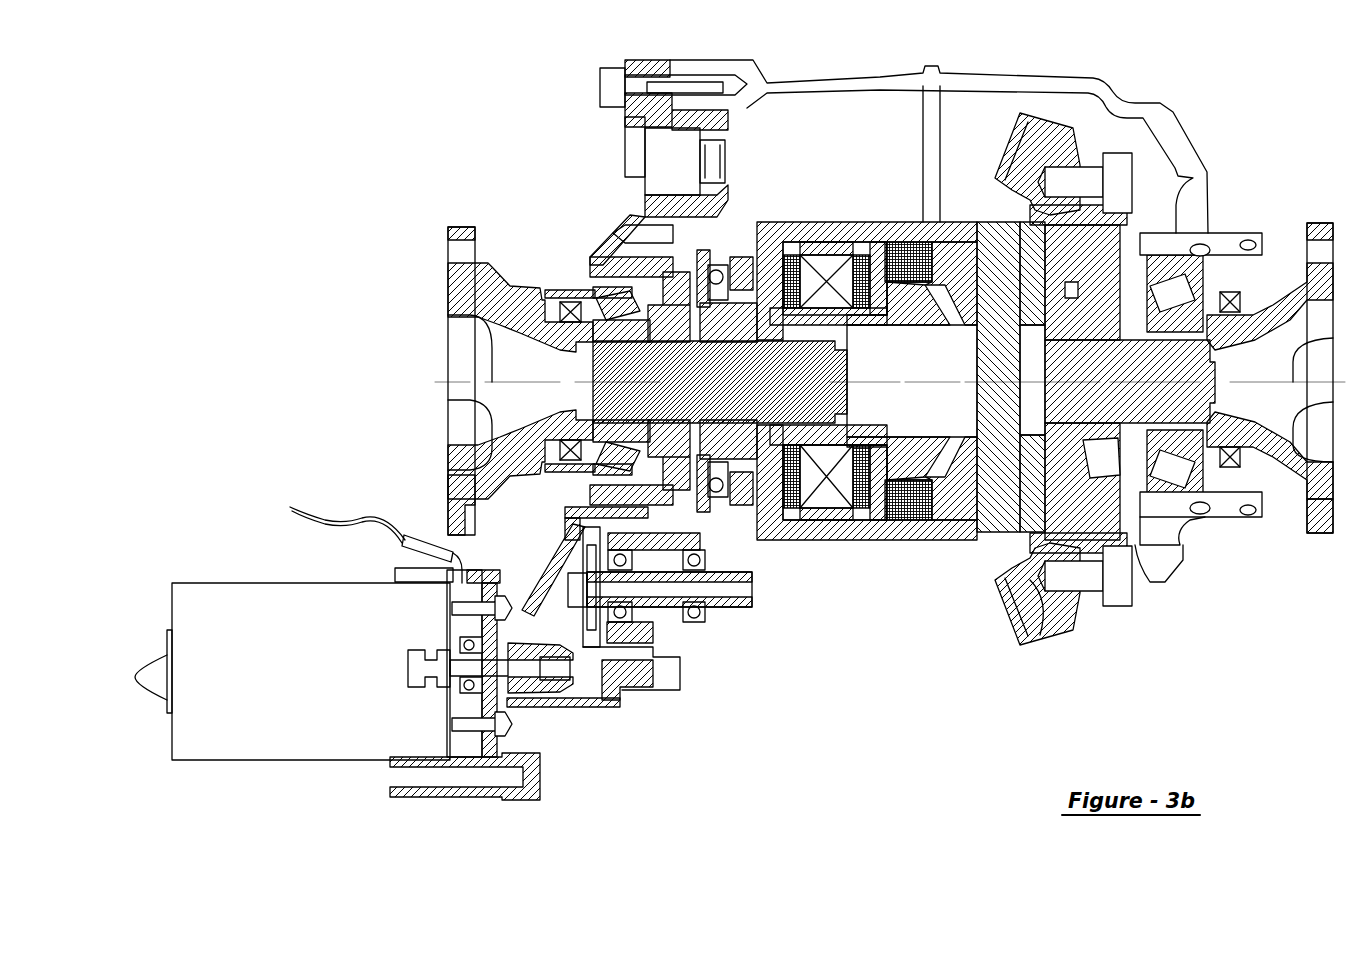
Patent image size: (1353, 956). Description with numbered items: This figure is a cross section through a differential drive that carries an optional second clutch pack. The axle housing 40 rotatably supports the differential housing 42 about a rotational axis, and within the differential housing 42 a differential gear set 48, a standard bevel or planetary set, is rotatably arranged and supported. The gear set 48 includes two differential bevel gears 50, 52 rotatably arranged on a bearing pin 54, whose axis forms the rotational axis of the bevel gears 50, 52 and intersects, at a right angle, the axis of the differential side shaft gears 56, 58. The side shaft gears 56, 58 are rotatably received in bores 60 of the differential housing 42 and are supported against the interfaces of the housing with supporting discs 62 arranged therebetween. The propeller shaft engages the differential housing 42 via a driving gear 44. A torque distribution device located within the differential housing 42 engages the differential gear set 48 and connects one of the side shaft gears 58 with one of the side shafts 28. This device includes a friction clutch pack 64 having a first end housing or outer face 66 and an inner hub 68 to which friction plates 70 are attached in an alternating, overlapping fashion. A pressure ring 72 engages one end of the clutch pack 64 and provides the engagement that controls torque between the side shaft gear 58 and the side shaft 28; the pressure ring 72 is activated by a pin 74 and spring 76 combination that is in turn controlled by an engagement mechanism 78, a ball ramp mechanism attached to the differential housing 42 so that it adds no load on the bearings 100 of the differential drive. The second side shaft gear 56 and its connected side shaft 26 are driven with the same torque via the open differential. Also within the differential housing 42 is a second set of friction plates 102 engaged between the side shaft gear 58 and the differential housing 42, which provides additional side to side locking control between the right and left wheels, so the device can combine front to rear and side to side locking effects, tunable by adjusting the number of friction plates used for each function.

The side shaft 26 is at (1160, 370).
The side shaft 28 is at (625, 360).
The axle housing 40 is at (985, 72).
The differential housing 42 is at (795, 235).
The driving gear 44 is at (1035, 640).
The differential gear set 48 is at (1125, 575).
The differential bevel gear 50 is at (975, 530).
The differential bevel gear 52 is at (935, 265).
The bearing pin 54 is at (1000, 580).
The differential side shaft gear 56 is at (955, 265).
The differential side shaft gear 58 is at (870, 260).
The bores 60 is at (697, 518).
The supporting discs 62 is at (1083, 435).
The clutch pack 64 is at (800, 480).
The first end housing 66 is at (832, 500).
The inner hub 68 is at (782, 470).
The friction plates 70 is at (865, 495).
The pressure ring 72 is at (780, 270).
The pin 74 is at (735, 505).
The spring 76 is at (640, 150).
The engagement mechanism 78 is at (569, 766).
The bearings 100 is at (622, 300).
The second clutch pack 102 is at (935, 520).